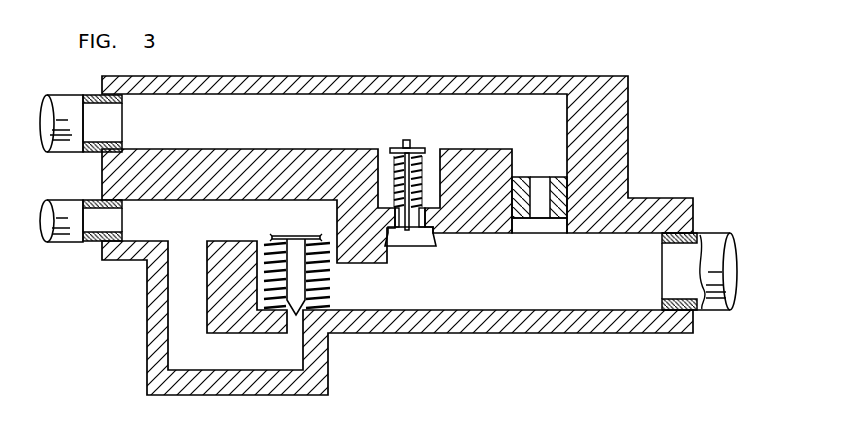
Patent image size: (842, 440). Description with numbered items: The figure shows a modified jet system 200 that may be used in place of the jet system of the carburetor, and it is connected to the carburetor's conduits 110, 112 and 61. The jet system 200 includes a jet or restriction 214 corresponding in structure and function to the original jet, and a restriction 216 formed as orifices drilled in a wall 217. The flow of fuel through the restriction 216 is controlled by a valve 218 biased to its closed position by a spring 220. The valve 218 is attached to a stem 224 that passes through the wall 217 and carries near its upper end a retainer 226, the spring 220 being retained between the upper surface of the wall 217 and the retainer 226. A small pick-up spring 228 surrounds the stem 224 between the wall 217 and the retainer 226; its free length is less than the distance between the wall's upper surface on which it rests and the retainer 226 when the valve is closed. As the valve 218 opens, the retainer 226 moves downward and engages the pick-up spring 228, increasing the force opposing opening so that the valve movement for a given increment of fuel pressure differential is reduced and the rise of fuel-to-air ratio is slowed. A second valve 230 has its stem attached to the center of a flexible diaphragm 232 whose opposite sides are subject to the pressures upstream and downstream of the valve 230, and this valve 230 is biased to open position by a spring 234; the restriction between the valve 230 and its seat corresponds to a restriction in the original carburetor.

The jet system 200 is at (438, 333).
The conduit 110 is at (63, 95).
The conduit 112 is at (71, 244).
The conduit 61 is at (716, 311).
The jet or restriction 214 is at (540, 180).
The restriction 216 is at (426, 214).
The wall 217 is at (406, 238).
The valve 218 is at (387, 246).
The spring 220 is at (418, 160).
The stem 224 is at (407, 140).
The retainer 226 is at (398, 156).
The pick-up spring 228 is at (390, 151).
The valve 230 is at (303, 293).
The flexible diaphragm 232 is at (273, 239).
The spring 234 is at (322, 227).